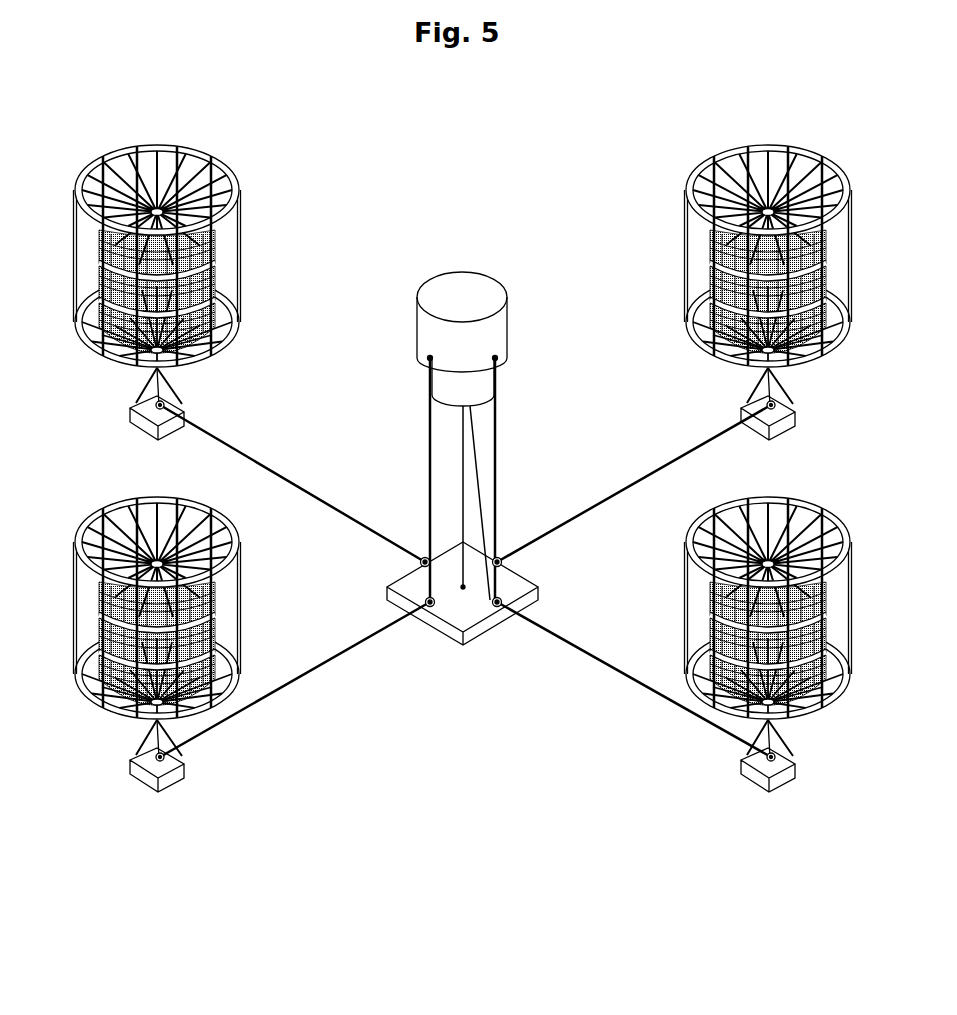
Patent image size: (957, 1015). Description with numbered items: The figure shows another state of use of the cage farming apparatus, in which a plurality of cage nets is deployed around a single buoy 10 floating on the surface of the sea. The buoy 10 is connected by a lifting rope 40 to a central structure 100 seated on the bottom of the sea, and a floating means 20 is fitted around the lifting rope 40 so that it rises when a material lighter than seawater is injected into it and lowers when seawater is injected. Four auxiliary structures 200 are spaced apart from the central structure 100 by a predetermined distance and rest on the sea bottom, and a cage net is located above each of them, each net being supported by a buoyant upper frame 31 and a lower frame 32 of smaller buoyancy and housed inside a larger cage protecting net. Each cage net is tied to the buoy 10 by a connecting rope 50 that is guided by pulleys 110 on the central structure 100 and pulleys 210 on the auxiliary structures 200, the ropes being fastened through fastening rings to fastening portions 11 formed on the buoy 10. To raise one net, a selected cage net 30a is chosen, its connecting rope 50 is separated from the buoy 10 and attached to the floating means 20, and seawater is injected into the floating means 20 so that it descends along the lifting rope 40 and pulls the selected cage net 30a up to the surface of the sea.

The buoy 10 is at (498, 333).
The fastening portions 11 is at (431, 361).
The floating means 20 is at (442, 388).
The selected cage net 30a is at (690, 655).
The upper frame 31 is at (216, 605).
The lower frame 32 is at (217, 683).
The lifting rope 40 is at (462, 493).
The connecting rope 50 is at (500, 578).
The central structure 100 is at (452, 633).
The pulleys 110 is at (492, 607).
The auxiliary structure 200 is at (170, 779).
The pulleys 210 is at (170, 757).